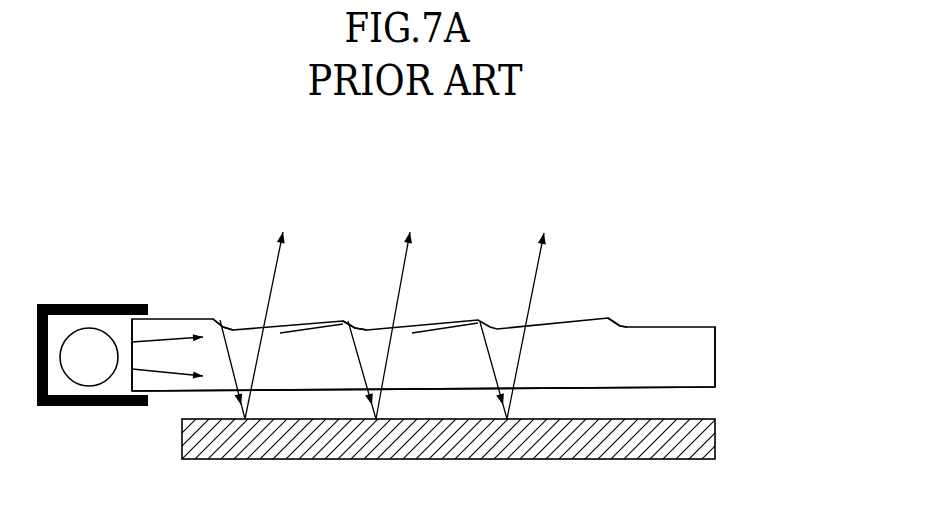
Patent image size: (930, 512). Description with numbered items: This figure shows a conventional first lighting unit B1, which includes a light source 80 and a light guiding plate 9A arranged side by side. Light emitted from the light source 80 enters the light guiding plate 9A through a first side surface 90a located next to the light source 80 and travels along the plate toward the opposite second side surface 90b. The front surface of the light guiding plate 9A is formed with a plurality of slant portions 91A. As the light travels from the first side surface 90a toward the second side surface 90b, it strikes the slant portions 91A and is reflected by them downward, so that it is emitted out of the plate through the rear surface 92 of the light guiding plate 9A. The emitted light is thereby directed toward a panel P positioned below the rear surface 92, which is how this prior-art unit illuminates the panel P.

The first lighting unit B1 is at (173, 218).
The light source 80 is at (90, 328).
The first side surface 90a is at (126, 322).
The second side surface 90b is at (715, 352).
The light guiding plate 9A is at (666, 327).
The slant portions 91A is at (220, 318).
The rear surface 92 is at (545, 392).
The panel P is at (708, 442).